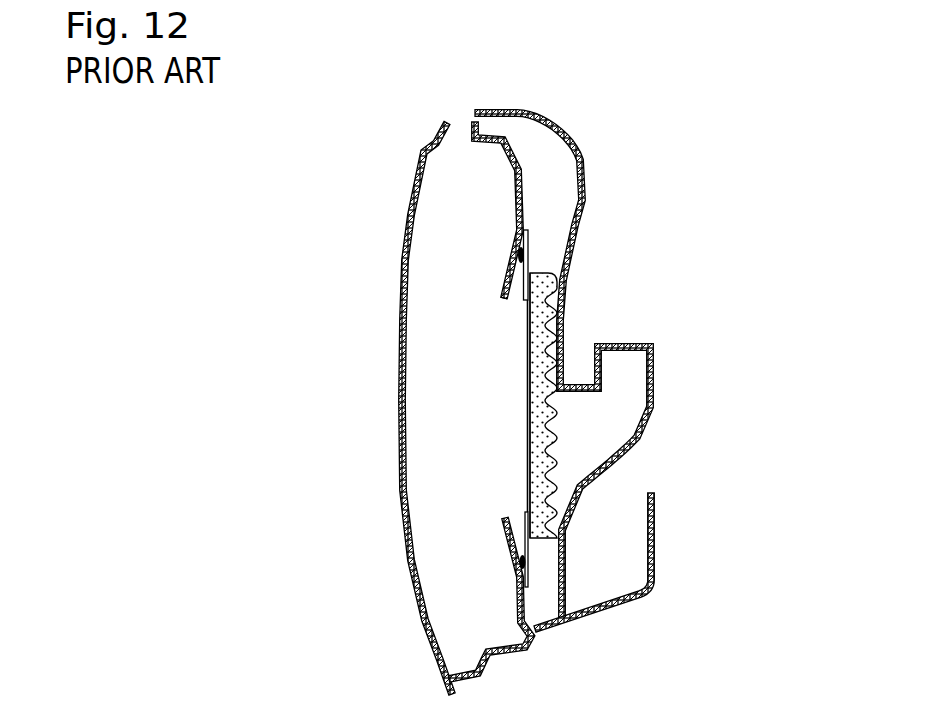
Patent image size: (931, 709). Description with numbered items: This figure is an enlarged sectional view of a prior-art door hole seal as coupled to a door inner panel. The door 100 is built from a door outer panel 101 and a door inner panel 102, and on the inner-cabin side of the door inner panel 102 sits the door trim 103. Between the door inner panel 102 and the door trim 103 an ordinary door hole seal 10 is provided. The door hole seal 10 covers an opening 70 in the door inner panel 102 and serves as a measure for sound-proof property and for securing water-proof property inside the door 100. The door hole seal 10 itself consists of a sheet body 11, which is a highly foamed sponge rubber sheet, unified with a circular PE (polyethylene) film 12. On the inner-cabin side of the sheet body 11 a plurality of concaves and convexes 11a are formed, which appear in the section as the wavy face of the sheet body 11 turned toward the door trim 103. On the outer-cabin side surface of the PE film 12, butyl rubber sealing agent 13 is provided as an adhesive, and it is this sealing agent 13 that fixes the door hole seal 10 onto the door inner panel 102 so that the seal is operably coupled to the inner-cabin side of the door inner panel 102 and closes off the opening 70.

The door 100 is at (625, 133).
The door outer panel 101 is at (402, 260).
The door inner panel 102 is at (515, 213).
The door trim 103 is at (564, 248).
The door hole seal 10 is at (505, 395).
The sheet body 11 is at (559, 327).
The concaves and convexes 11a is at (559, 345).
The PE film 12 is at (529, 242).
The butyl rubber sealing agent 13 is at (518, 252).
The opening 70 is at (513, 302).